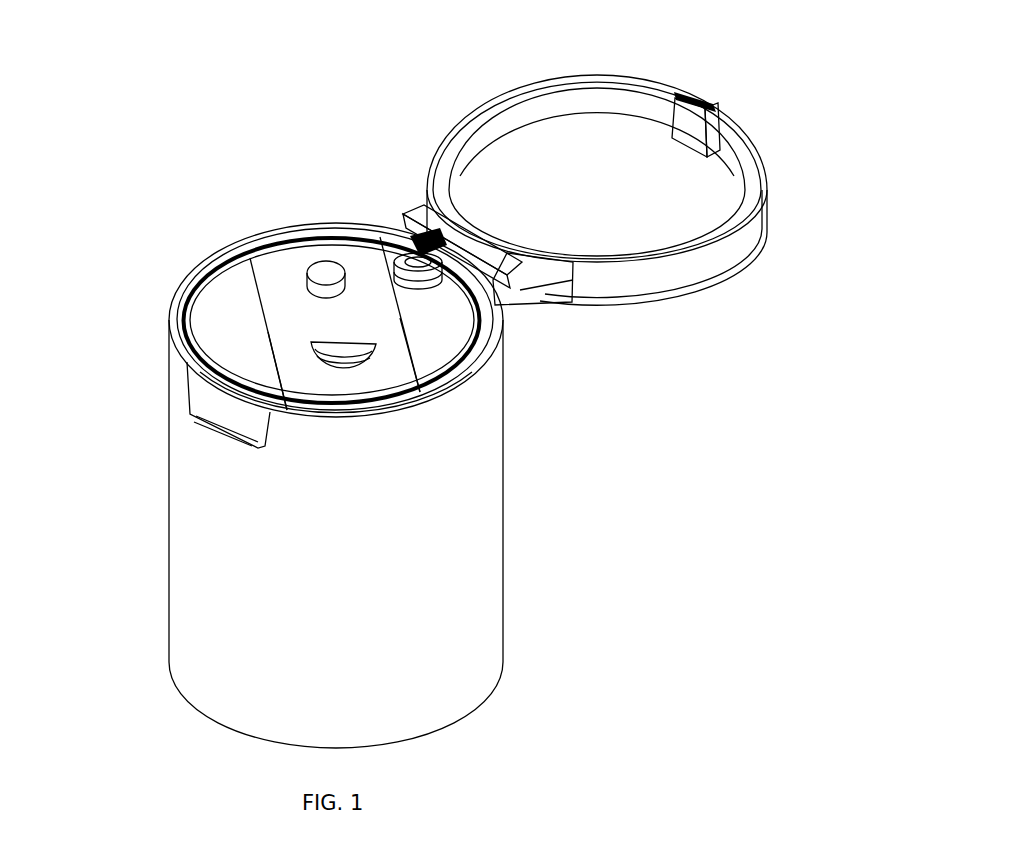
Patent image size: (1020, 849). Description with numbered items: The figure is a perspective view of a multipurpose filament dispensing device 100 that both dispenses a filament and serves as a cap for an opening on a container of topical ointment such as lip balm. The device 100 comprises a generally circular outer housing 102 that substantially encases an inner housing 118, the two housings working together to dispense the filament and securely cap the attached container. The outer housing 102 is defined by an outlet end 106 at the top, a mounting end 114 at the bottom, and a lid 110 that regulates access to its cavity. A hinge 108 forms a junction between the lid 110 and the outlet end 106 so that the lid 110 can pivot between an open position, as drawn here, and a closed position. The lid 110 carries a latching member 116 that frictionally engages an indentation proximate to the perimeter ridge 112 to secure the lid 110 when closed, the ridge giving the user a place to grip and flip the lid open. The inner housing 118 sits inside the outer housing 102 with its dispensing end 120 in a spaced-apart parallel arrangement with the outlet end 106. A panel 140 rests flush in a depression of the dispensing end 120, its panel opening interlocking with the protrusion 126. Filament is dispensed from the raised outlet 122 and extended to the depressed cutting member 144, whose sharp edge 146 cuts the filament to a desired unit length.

The multipurpose filament dispensing device 100 is at (648, 536).
The outer housing 102 is at (168, 534).
The outlet end 106 is at (171, 316).
The hinge 108 is at (443, 233).
The lid 110 is at (503, 92).
The perimeter ridge 112 is at (195, 416).
The mounting end 114 is at (176, 680).
The latching member 116 is at (690, 108).
The inner housing 118 is at (283, 410).
The dispensing end 120 is at (212, 308).
The raised outlet 122 is at (395, 252).
The protrusion 126 is at (310, 270).
The panel 140 is at (403, 327).
The cutting member 144 is at (323, 340).
The sharp edge 146 is at (380, 347).